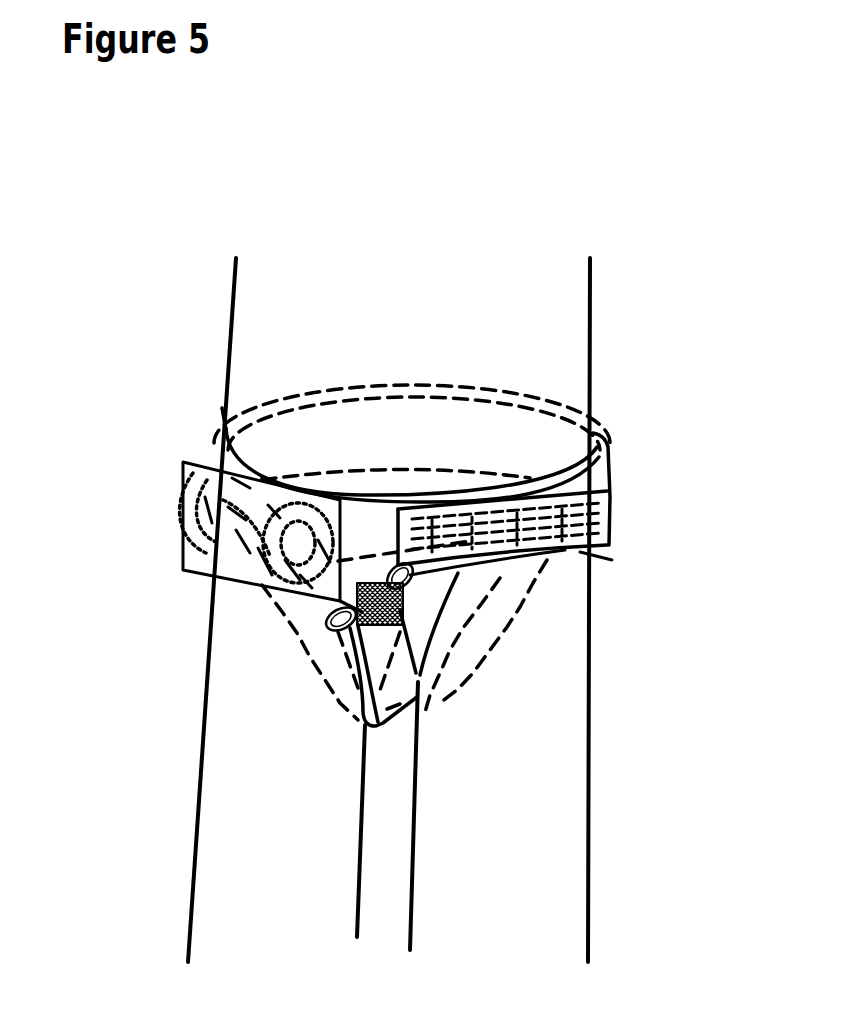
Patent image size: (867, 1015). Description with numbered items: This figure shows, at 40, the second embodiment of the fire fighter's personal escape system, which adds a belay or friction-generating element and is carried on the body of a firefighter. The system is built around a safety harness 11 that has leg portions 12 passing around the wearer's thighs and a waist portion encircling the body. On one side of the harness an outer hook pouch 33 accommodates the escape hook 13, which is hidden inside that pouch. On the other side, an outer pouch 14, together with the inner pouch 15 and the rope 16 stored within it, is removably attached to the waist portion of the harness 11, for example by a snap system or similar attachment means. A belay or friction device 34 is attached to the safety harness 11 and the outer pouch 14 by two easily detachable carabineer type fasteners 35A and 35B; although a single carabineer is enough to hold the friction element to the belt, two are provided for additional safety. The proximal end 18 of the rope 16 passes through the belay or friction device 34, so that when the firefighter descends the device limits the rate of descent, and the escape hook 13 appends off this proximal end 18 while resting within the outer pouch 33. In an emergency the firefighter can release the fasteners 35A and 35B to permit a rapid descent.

The fire fighter's personal escape system 40 is at (333, 151).
The safety harness 11 is at (612, 455).
The leg portions 12 is at (297, 620).
The escape hook 13 is at (183, 508).
The outer hook pouch 33 is at (183, 568).
The belay or friction device 34 is at (382, 627).
The carabineer type fastener 35A is at (326, 626).
The carabineer type fastener 35B is at (390, 563).
The outer pouch 14 is at (610, 535).
The inner pouch 15 is at (592, 549).
The rope 16 is at (606, 505).
The proximal end of the rope 18 is at (414, 580).